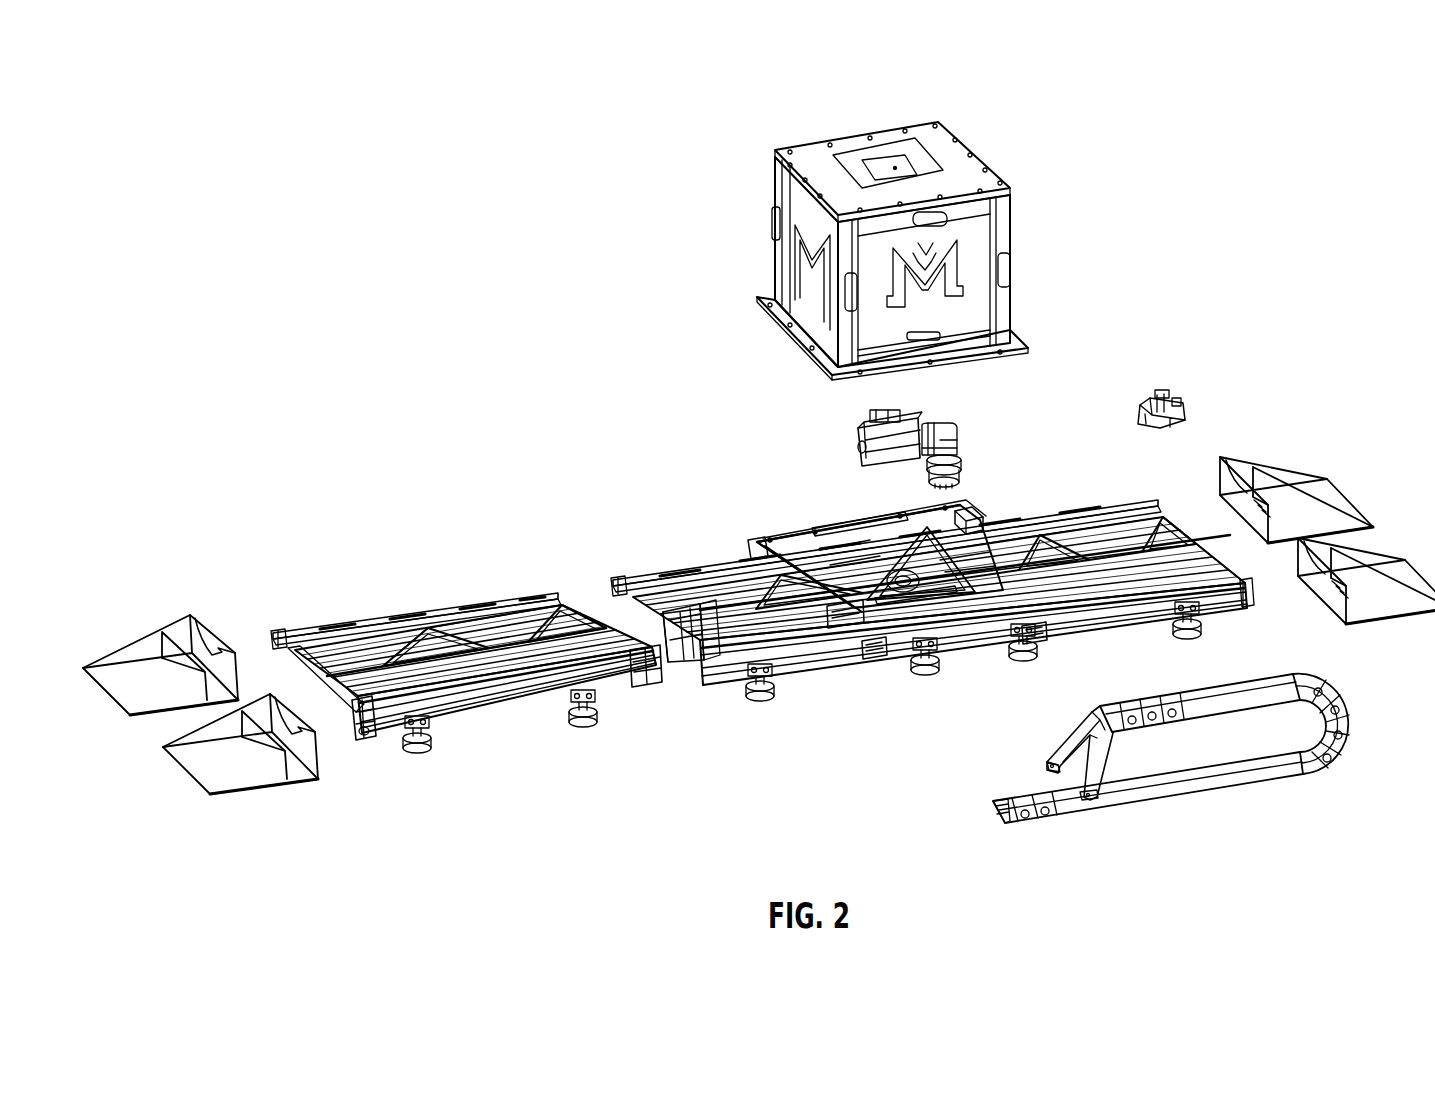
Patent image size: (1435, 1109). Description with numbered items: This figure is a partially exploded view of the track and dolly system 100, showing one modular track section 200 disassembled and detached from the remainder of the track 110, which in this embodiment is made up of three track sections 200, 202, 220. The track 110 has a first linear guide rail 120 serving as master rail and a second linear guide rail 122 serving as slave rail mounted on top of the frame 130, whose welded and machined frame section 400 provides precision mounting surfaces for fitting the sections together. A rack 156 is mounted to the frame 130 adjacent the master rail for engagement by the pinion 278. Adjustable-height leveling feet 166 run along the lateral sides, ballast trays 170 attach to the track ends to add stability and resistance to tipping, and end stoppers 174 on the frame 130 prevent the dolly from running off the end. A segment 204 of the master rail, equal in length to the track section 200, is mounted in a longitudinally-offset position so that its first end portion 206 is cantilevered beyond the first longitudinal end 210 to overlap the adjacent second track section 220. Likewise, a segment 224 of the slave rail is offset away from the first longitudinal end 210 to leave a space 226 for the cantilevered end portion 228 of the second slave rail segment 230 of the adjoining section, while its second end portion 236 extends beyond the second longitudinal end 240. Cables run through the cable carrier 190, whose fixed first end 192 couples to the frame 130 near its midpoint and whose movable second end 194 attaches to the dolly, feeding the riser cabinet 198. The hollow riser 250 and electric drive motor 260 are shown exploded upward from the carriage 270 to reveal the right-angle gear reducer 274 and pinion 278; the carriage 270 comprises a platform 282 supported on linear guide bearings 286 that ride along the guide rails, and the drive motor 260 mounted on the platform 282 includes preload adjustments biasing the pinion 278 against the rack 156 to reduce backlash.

The track and dolly system 100 is at (237, 270).
The track 110 is at (698, 810).
The first linear guide rail 120 is at (792, 670).
The second linear guide rail 122 is at (728, 570).
The frame 130 is at (430, 612).
The rack 156 is at (782, 705).
The adjustable-height leveling feet 166 is at (426, 762).
The ballast trays 170 is at (1290, 467).
The end stoppers 174 is at (1172, 400).
The cable carrier 190 is at (1280, 795).
The first end 192 is at (1006, 826).
The second end 194 is at (1112, 746).
The riser cabinet 198 is at (1013, 240).
The track section 200 is at (389, 511).
The track section 202 is at (1128, 633).
The segment 204 is at (518, 690).
The first end portion 206 is at (661, 667).
The first longitudinal end 210 is at (559, 600).
The second track section 220 is at (701, 562).
The segment 224 is at (366, 610).
The space 226 is at (539, 585).
The cantilevered end portion 228 is at (630, 578).
The second slave rail segment 230 is at (668, 580).
The second end portion 236 is at (281, 634).
The second longitudinal end 240 is at (342, 737).
The riser 250 is at (1008, 99).
The electric drive motor 260 is at (918, 420).
The carriage 270 is at (797, 522).
The right-angle gear reducer 274 is at (958, 438).
The pinion 278 is at (962, 477).
The platform 282 is at (925, 514).
The linear guide bearings 286 is at (962, 521).
The frame section 400 is at (480, 602).